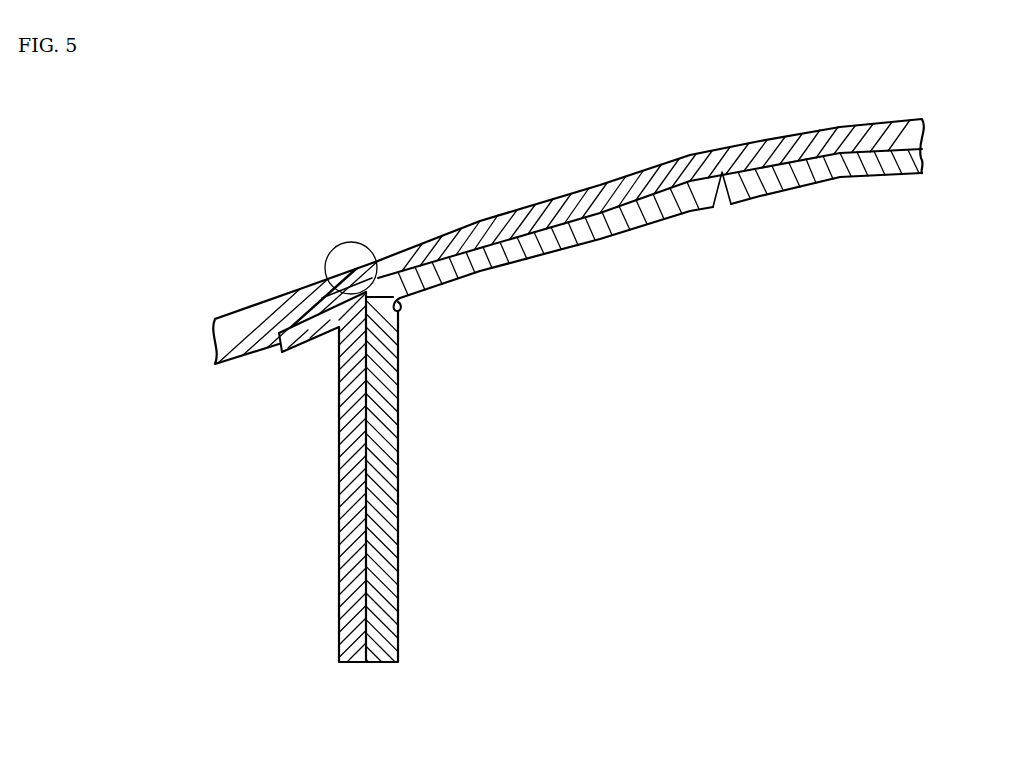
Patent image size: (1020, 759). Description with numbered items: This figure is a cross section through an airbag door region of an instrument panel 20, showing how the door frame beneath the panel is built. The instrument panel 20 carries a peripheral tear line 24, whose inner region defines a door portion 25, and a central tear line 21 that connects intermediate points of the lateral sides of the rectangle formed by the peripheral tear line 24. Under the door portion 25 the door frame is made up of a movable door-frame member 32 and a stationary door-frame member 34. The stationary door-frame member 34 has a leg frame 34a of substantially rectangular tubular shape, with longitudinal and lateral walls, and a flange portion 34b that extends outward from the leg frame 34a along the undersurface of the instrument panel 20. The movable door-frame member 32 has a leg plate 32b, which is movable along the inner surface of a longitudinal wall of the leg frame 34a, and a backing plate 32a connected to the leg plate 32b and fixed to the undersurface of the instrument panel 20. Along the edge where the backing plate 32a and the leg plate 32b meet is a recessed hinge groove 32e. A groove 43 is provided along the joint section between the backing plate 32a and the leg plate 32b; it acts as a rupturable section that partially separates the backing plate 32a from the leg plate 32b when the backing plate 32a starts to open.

The instrument panel 20 is at (232, 318).
The door portion 25 is at (755, 125).
The grooves 43 is at (330, 288).
The peripheral tear line 24 is at (378, 266).
The stationary door-frame member 34 is at (267, 502).
The leg frame 34a is at (339, 412).
The flange portion 34b is at (297, 347).
The movable door-frame member 32 is at (644, 442).
The backing plate 32a is at (609, 238).
The leg plate 32b is at (398, 412).
The hinge groove 32e is at (402, 312).
The central tear line 21 is at (723, 210).